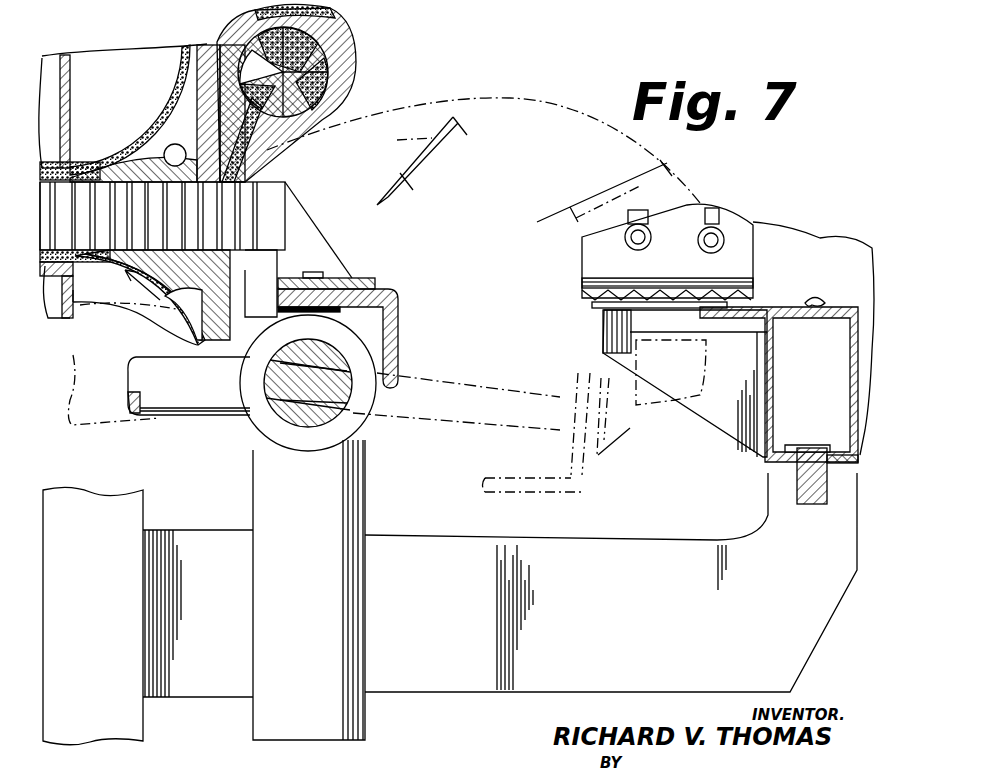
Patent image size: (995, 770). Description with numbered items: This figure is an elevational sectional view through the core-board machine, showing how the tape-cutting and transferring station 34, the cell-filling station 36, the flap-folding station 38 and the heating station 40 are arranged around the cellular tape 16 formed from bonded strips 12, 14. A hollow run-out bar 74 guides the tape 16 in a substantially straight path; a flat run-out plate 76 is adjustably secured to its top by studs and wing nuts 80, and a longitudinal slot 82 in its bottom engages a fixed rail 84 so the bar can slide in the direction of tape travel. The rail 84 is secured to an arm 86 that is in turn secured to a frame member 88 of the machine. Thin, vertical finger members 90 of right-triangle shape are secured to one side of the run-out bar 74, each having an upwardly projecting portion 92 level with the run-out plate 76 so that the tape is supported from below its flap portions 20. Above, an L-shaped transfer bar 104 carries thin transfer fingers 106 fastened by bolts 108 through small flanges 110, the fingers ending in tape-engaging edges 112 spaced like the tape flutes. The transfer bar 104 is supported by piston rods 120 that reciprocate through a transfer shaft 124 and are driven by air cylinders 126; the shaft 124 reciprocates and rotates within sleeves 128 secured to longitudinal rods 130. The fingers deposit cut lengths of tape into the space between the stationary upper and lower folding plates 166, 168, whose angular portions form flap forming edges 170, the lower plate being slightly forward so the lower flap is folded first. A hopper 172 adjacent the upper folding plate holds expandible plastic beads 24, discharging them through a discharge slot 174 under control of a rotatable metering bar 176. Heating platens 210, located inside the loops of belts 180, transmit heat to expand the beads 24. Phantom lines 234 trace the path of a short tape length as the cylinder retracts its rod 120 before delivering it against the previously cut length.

The strip 12 is at (440, 165).
The strip 14 is at (690, 300).
The tape 16 is at (636, 117).
The flap portion 20 is at (455, 100).
The expandible plastic beads 24 is at (350, 60).
The tape-cutting and transferring station 34 is at (442, 250).
The cell-filling station 36 is at (370, 121).
The flap-folding station 38 is at (250, 218).
The heating station 40 is at (76, 106).
The run-out bar 74 is at (858, 390).
The run-out plate 76 is at (772, 307).
The wing nut 80 is at (824, 300).
The longitudinal slot 82 is at (830, 460).
The rail 84 is at (810, 448).
The arm 86 is at (475, 690).
The frame member 88 is at (138, 738).
The finger member 90 is at (705, 432).
The upwardly projecting portion 92 is at (603, 320).
The transfer bar 104 is at (400, 318).
The transfer finger 106 is at (330, 245).
The bolt 108 is at (300, 280).
The flange 110 is at (330, 278).
The tape-engaging edge 112 is at (671, 372).
The piston rod 120 is at (330, 312).
The transfer shaft 124 is at (280, 425).
The air cylinder 126 is at (98, 425).
The sleeve 128 is at (368, 428).
The rod 130 is at (158, 416).
The upper folding plate 166 is at (225, 44).
The lower folding plate 168 is at (181, 295).
The flap forming edge 170 is at (170, 212).
The hopper 172 is at (348, 24).
The discharge slot 174 is at (265, 165).
The metering bar 176 is at (340, 85).
The belt 180 is at (178, 62).
The heating platen 210 is at (62, 58).
The phantom lines 234 is at (530, 120).